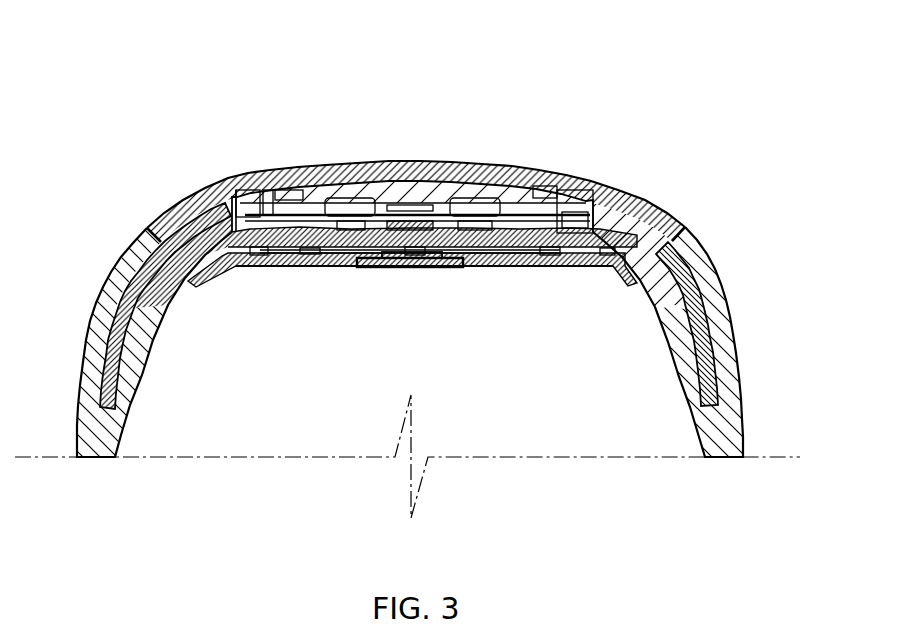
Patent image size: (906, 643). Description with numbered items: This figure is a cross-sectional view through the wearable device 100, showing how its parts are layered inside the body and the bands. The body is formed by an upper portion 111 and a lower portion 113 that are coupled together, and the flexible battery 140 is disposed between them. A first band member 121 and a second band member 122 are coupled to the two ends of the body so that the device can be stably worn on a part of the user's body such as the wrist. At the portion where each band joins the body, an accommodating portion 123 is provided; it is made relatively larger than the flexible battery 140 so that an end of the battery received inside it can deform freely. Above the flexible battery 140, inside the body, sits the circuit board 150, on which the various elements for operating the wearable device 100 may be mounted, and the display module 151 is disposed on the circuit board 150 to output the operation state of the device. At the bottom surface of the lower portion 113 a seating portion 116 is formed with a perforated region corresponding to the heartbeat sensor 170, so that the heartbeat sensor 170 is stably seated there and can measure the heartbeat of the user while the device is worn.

The wearable device 100 is at (288, 86).
The upper portion 111 is at (200, 168).
The lower portion 113 is at (228, 270).
The seating portion 116 is at (398, 268).
The first band member 121 is at (720, 447).
The second band member 122 is at (102, 445).
The accommodating portion 123 is at (672, 268).
The flexible battery 140 is at (140, 265).
The circuit board 150 is at (508, 207).
The display module 151 is at (377, 195).
The heartbeat sensor 170 is at (418, 267).